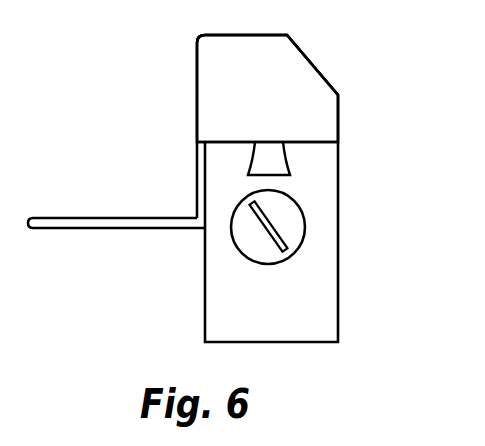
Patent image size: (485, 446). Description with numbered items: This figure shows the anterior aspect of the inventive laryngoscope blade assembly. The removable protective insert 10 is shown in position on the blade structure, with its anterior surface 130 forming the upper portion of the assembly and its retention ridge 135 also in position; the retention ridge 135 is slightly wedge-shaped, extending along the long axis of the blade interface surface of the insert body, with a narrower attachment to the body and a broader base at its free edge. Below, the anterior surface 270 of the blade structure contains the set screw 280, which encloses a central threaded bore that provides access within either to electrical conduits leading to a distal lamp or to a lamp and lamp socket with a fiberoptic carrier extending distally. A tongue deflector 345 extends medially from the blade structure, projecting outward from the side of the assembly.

The removable protective insert 10 is at (351, 57).
The anterior surface 130 is at (214, 82).
The retention ridge 135 is at (276, 169).
The anterior surface 270 is at (326, 322).
The set screw 280 is at (243, 240).
The tongue deflector 345 is at (128, 205).